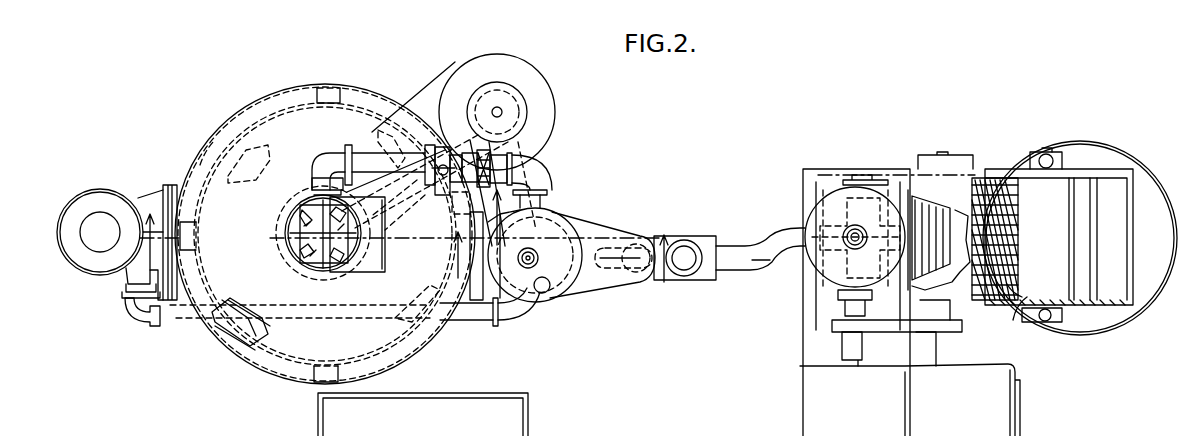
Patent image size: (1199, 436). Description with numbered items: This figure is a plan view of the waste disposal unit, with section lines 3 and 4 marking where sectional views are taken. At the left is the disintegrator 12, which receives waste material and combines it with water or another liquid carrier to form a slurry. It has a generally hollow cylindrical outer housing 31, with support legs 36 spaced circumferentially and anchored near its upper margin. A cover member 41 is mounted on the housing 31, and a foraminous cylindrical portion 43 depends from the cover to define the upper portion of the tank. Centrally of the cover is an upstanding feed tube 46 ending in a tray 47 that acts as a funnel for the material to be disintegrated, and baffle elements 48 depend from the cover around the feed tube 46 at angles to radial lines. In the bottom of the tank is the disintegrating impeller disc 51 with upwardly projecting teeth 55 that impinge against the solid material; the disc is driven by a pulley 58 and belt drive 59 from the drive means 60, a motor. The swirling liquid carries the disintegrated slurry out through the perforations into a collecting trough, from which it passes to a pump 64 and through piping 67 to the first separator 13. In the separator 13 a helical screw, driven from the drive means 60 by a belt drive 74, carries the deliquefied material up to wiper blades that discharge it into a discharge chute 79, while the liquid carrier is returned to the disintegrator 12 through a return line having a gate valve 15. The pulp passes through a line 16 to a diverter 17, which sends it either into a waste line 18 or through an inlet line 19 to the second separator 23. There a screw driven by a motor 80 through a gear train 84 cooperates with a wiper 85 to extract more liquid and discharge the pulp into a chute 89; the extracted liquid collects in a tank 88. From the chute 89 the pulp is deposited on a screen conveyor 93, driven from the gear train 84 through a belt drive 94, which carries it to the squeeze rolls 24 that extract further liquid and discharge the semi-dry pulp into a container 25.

The disintegrator 12 is at (236, 112).
The first separator 13 is at (555, 210).
The gate valve 15 is at (448, 190).
The line 16 is at (686, 242).
The diverter 17 is at (716, 234).
The waste line 18 is at (612, 272).
The inlet line 19 is at (758, 272).
The second separator 23 is at (798, 204).
The squeeze-roll extractor 24 is at (1025, 226).
The container 25 is at (1114, 144).
The outer housing 31 is at (342, 92).
The support legs 36 is at (300, 94).
The cover member 41 is at (230, 338).
The foraminous cylindrical portion 43 is at (212, 156).
The feed tube 46 is at (292, 250).
The tray 47 is at (374, 276).
The baffle elements 48 is at (274, 160).
The disintegrating impeller disc 51 is at (292, 222).
The teeth 55 is at (312, 270).
The pulley 58 is at (418, 184).
The belt drive 59 is at (412, 220).
The drive means 60 is at (490, 72).
The pump 64 is at (122, 278).
The piping 67 is at (480, 314).
The belt drive 74 is at (542, 178).
The discharge chute 79 is at (592, 236).
The motor 80 is at (910, 400).
The gear train 84 is at (848, 252).
The wiper 85 is at (884, 200).
The tank 88 is at (1014, 318).
The chute 89 is at (935, 212).
The screen conveyor 93 is at (992, 190).
The belt drive 94 is at (900, 330).
The section line 3- 3 is at (326, 230).
The section line 4- 4 is at (408, 268).